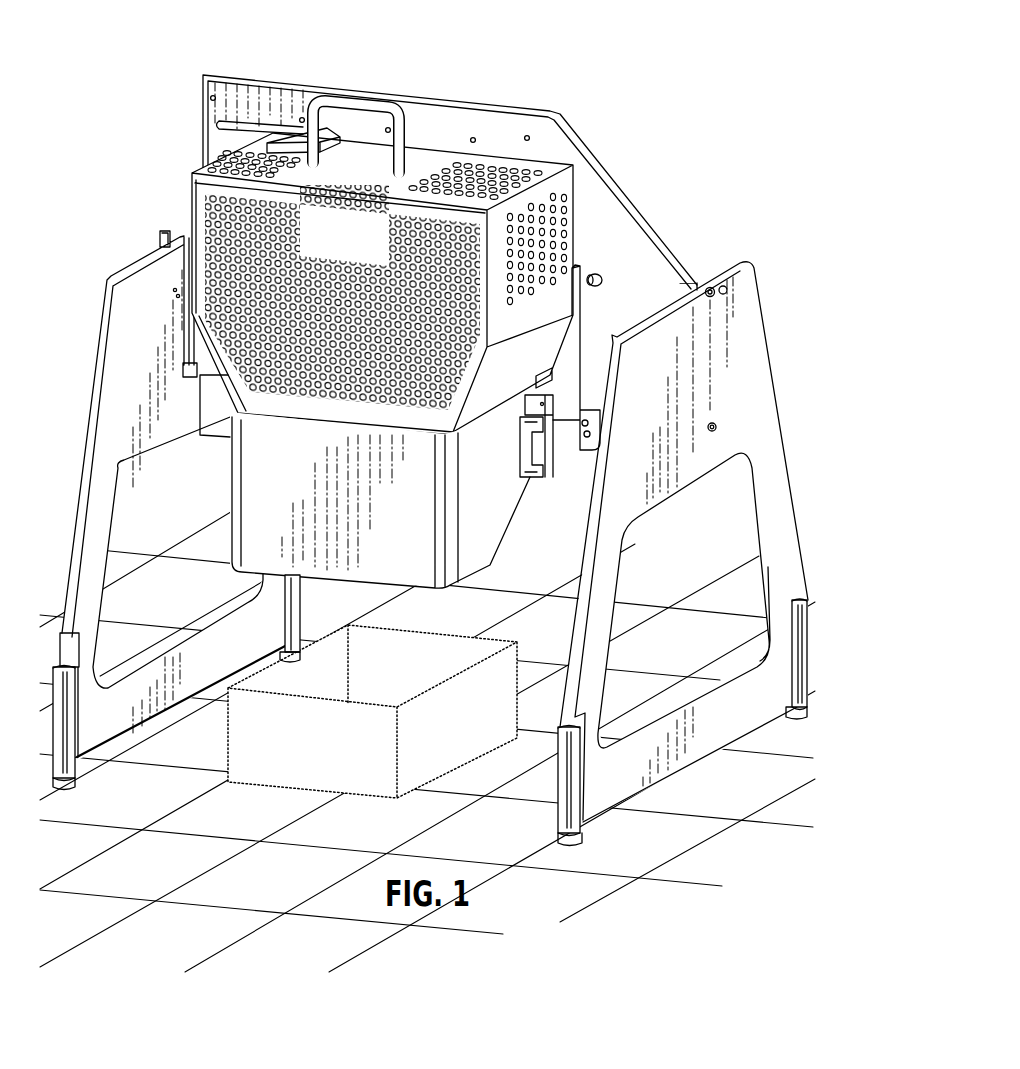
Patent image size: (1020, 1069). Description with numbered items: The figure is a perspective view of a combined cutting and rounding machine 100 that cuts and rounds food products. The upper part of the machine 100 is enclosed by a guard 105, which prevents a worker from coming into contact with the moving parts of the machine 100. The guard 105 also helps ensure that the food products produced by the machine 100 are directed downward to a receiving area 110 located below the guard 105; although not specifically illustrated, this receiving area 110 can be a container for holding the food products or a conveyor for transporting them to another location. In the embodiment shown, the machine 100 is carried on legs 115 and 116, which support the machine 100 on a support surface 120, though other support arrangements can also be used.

The combined cutting and rounding machine 100 is at (432, 428).
The guard 105 is at (423, 160).
The receiving area 110 is at (401, 692).
The leg 115 is at (747, 313).
The leg 116 is at (137, 290).
The support surface 120 is at (272, 857).